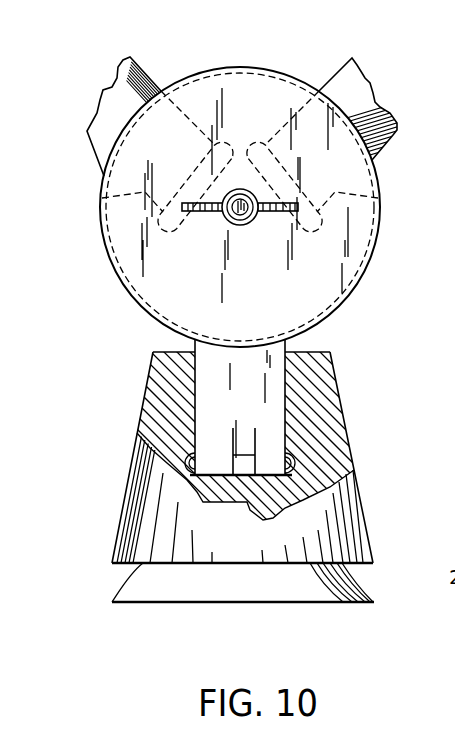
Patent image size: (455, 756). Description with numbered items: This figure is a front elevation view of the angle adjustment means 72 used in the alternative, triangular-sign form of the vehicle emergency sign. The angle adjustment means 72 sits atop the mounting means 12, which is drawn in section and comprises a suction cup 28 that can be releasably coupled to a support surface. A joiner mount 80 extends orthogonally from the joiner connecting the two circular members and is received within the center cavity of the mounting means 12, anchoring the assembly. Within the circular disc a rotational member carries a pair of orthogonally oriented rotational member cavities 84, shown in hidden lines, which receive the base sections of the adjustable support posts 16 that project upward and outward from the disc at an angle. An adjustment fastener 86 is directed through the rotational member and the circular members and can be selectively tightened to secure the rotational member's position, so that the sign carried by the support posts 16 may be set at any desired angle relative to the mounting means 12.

The mounting means 12 is at (348, 384).
The adjustable support posts 16 is at (160, 68).
The suction cup 28 is at (347, 595).
The angle adjustment means 72 is at (388, 176).
The joiner mount 80 is at (270, 441).
The rotational member cavities 84 is at (101, 207).
The adjustment fastener 86 is at (304, 213).